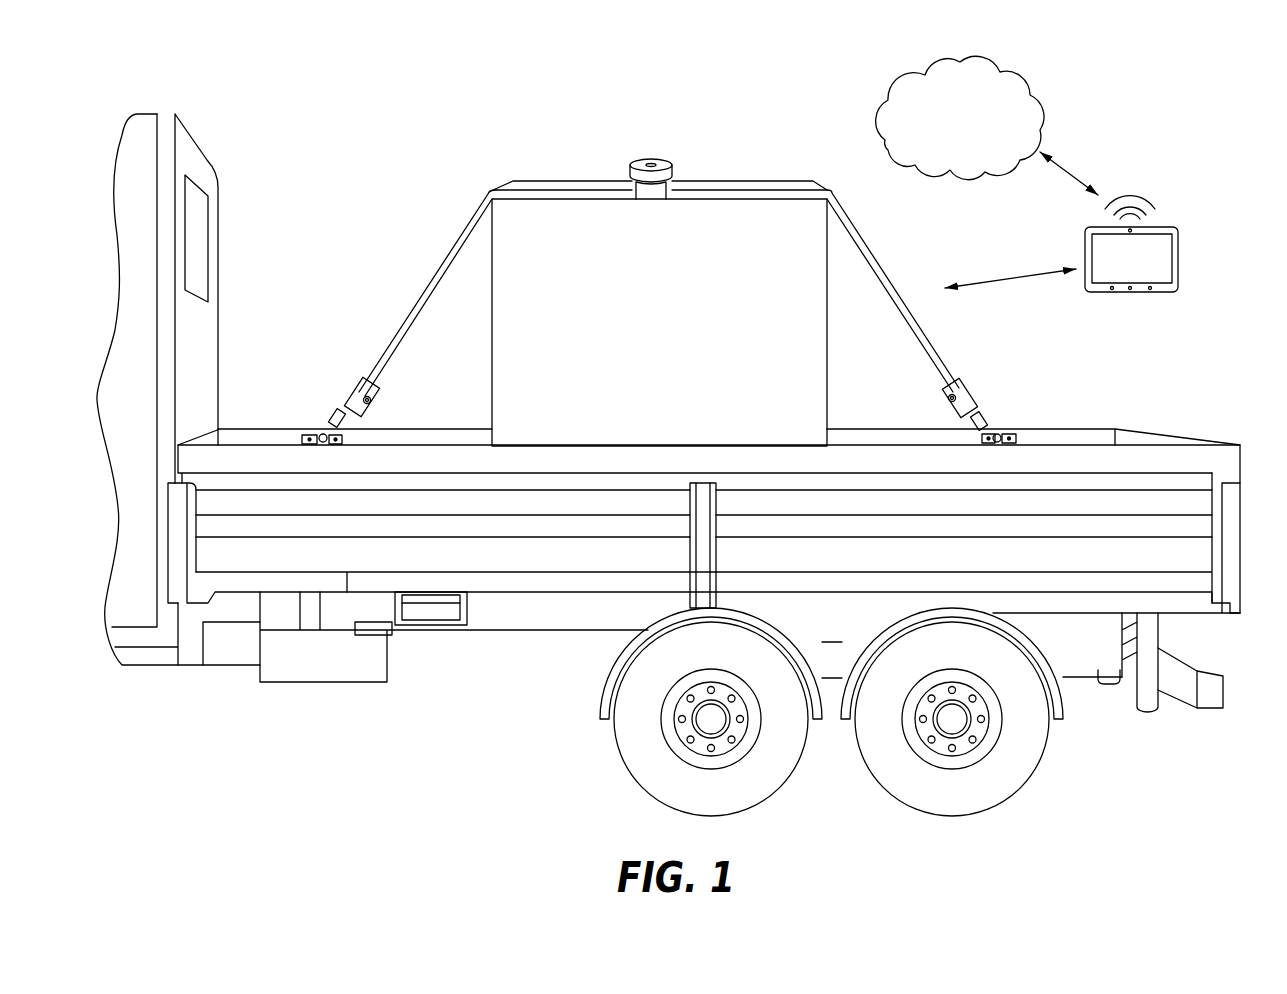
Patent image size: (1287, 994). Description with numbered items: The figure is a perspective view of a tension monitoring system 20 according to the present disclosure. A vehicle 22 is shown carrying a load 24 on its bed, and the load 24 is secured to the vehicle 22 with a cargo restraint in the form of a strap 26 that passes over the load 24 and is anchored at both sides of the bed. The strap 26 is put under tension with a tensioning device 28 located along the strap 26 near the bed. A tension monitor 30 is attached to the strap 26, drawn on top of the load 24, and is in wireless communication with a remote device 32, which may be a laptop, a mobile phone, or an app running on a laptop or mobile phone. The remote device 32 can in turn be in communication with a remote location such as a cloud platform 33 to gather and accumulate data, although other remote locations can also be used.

The tension monitoring system 20 is at (303, 128).
The vehicle 22 is at (500, 548).
The load 24 is at (520, 343).
The strap 26 is at (897, 307).
The tensioning device 28 is at (960, 388).
The tension monitor 30 is at (630, 172).
The remote device 32 is at (1155, 268).
The cloud platform 33 is at (1035, 102).